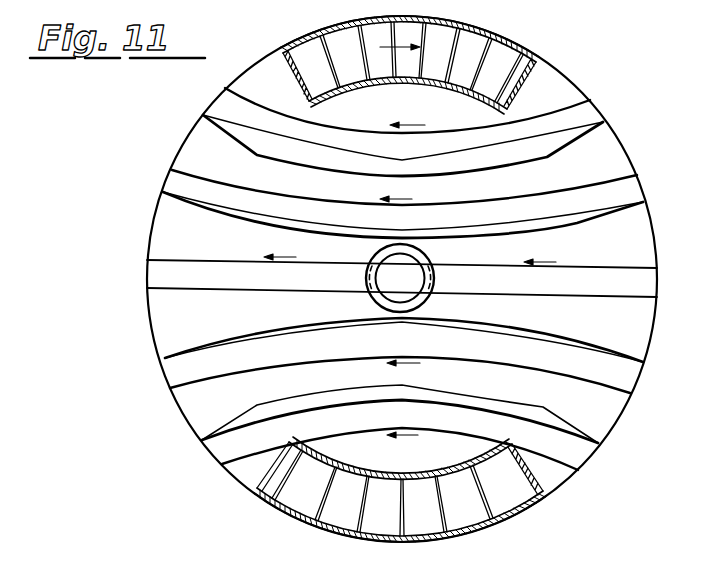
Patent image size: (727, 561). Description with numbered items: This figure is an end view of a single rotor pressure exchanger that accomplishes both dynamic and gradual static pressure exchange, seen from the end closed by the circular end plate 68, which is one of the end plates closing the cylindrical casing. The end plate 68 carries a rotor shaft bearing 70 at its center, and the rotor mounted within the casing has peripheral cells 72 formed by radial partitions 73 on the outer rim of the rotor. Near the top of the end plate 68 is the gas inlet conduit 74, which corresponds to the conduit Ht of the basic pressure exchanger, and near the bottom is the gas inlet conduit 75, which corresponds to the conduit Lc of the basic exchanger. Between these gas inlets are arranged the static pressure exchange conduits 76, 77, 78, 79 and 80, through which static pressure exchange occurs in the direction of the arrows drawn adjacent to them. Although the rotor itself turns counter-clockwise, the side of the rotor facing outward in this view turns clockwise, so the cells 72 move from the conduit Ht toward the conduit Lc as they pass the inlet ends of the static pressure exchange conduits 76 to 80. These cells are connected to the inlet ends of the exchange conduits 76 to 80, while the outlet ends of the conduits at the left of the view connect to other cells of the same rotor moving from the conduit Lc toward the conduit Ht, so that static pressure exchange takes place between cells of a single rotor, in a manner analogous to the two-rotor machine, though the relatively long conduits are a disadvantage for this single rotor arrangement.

The end plate 68 is at (602, 153).
The rotor shaft bearing 70 is at (425, 301).
The peripheral cells 72 is at (338, 510).
The radial partitions 73 is at (283, 490).
The gas inlet conduit 74 is at (382, 80).
The gas inlet conduit 75 is at (350, 466).
The static pressure exchange conduit 76 is at (283, 152).
The static pressure exchange conduit 77 is at (258, 218).
The static pressure exchange conduit 78 is at (246, 278).
The static pressure exchange conduit 79 is at (246, 360).
The static pressure exchange conduit 80 is at (513, 405).
The high-pressure inlet conduit Ht is at (535, 75).
The low-pressure inlet conduit Lc is at (545, 481).